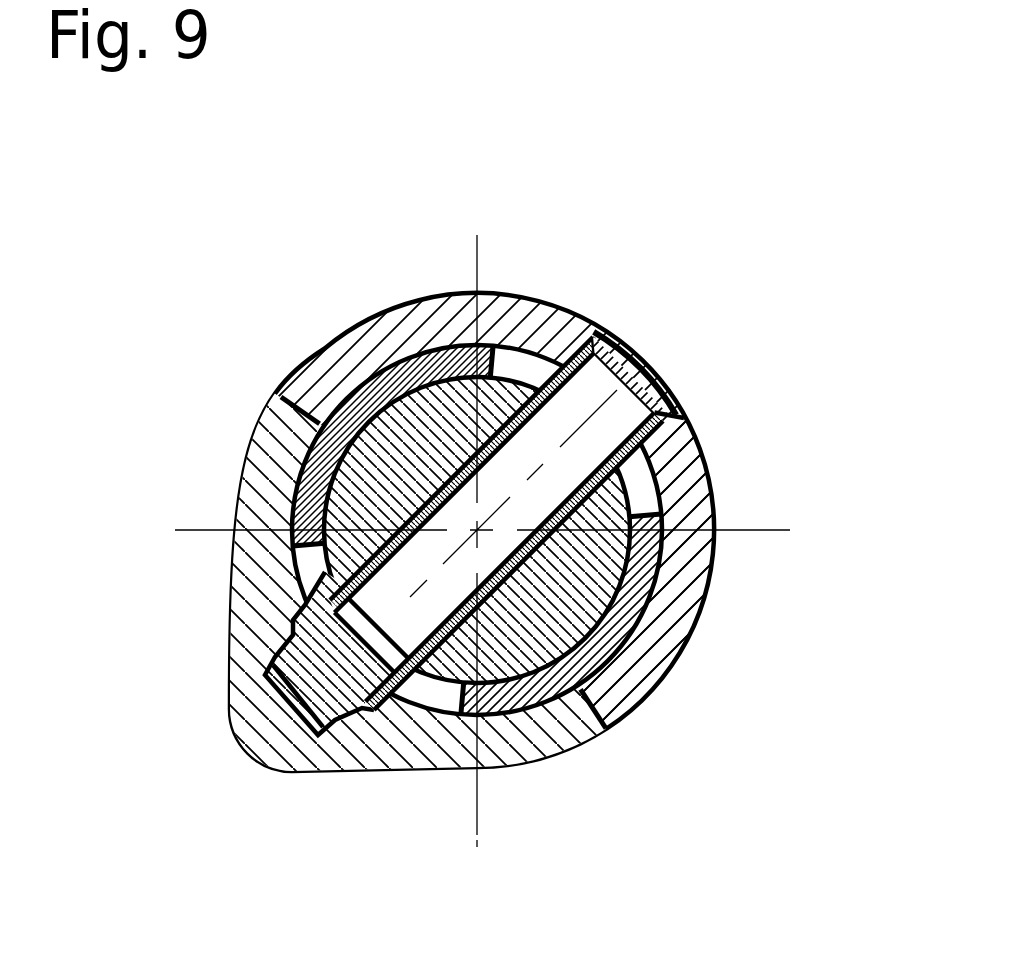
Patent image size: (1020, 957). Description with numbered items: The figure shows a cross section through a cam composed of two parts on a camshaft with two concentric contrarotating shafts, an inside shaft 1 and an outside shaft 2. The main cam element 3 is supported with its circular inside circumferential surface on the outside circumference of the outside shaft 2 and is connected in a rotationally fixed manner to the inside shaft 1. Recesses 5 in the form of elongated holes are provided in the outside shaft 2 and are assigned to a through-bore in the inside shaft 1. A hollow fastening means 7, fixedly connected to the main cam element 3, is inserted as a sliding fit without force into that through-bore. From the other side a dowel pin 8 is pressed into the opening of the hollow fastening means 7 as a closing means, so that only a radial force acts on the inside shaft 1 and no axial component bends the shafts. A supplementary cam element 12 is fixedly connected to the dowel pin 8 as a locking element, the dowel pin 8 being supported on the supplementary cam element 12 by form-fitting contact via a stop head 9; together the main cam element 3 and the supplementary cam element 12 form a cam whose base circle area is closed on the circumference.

The inside shaft 1 is at (633, 460).
The outside shaft 2 is at (645, 620).
The main cam element 3 is at (543, 735).
The recesses 5 is at (513, 903).
The fastening means 7 is at (312, 660).
The dowel pin 8 is at (556, 425).
The stop head 9 is at (620, 347).
The supplementary cam element 12 is at (410, 318).